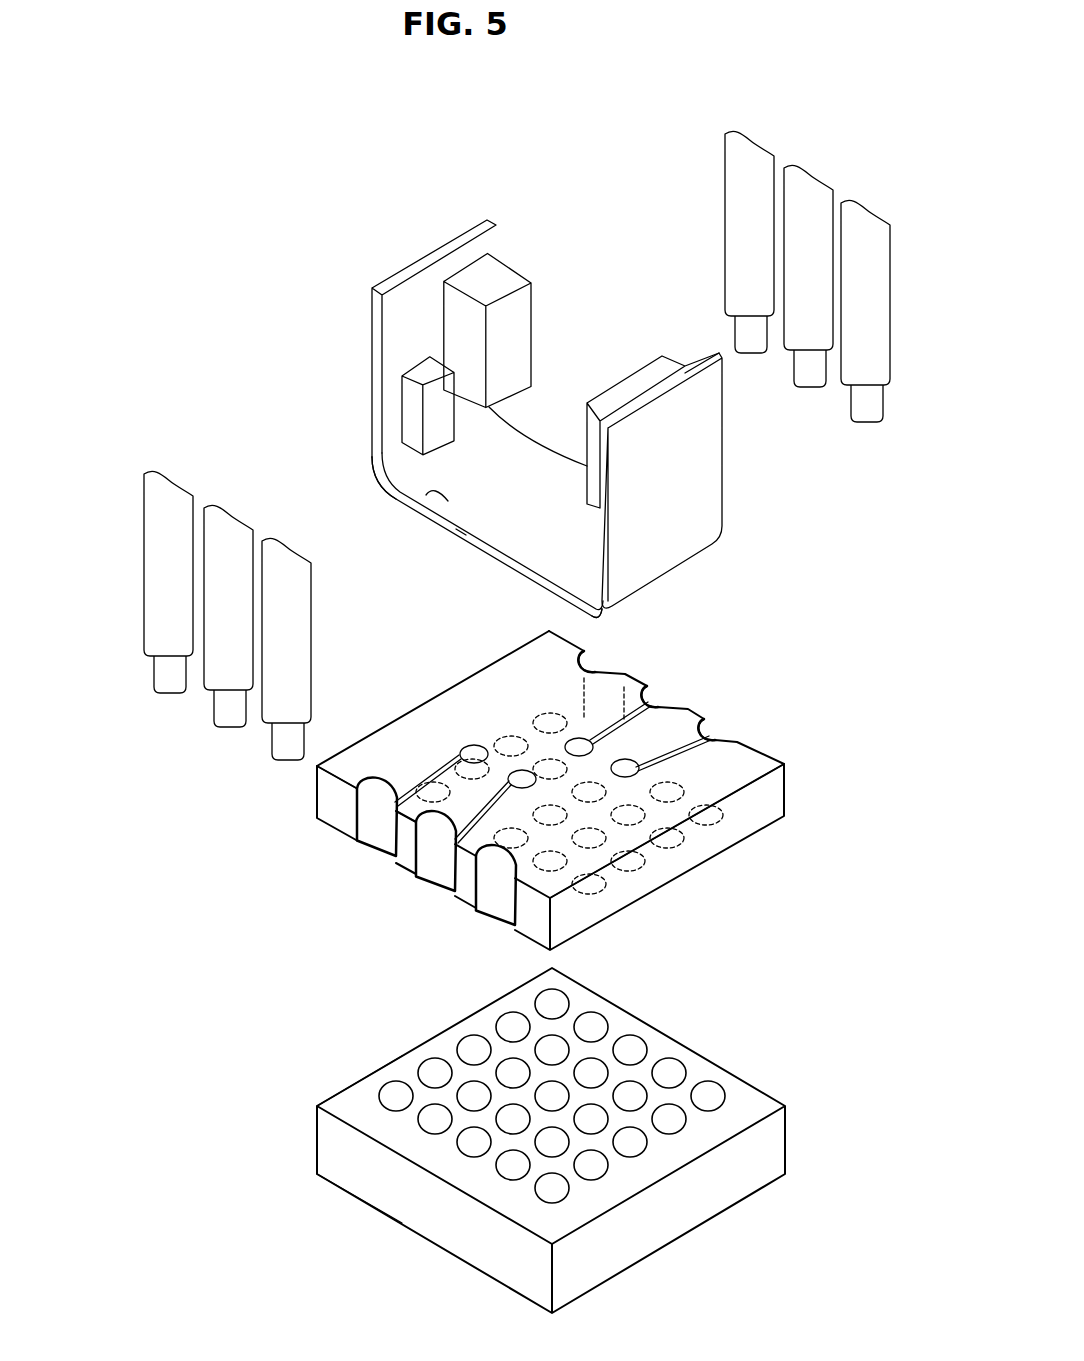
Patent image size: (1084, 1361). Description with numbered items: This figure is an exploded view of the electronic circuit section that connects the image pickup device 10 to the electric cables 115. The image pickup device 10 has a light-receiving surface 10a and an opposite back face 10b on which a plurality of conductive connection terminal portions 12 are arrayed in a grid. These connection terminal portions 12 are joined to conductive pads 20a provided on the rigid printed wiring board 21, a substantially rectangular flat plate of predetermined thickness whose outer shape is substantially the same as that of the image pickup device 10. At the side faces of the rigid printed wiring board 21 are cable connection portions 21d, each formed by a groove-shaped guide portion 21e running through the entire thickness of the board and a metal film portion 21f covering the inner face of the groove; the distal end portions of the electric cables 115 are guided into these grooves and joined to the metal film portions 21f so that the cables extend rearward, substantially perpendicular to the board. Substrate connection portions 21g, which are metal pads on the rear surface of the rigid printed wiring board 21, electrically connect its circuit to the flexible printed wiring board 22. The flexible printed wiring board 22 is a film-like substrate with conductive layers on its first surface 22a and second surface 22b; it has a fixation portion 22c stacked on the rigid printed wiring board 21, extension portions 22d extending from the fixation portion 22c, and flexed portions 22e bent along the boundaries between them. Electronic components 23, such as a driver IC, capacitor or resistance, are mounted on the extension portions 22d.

The image pickup device 10 is at (582, 1140).
The light-receiving surface 10a is at (368, 1207).
The back face 10b is at (350, 1103).
The connection terminal portions 12 is at (457, 1043).
The conductive pads 20a is at (612, 902).
The rigid printed wiring board 21 is at (577, 797).
The cable connection portions 21d is at (631, 660).
The guide portion 21e is at (387, 835).
The metal film portion 21f is at (347, 777).
The substrate connection portions 21g is at (513, 773).
The flexible printed wiring board 22 is at (598, 429).
The first surface 22a is at (514, 578).
The second surface 22b is at (421, 517).
The fixation portion 22c is at (460, 547).
The extension portions 22d is at (370, 321).
The flexed portions 22e is at (379, 484).
The electronic components 23 is at (430, 364).
The electric cables 115 is at (839, 297).